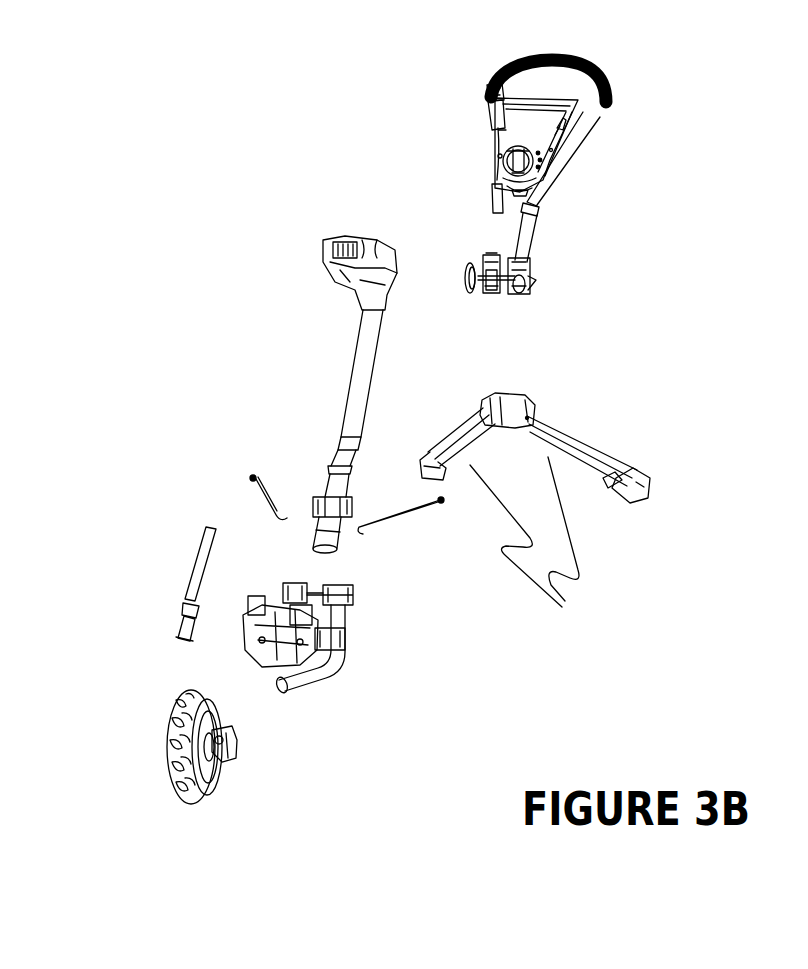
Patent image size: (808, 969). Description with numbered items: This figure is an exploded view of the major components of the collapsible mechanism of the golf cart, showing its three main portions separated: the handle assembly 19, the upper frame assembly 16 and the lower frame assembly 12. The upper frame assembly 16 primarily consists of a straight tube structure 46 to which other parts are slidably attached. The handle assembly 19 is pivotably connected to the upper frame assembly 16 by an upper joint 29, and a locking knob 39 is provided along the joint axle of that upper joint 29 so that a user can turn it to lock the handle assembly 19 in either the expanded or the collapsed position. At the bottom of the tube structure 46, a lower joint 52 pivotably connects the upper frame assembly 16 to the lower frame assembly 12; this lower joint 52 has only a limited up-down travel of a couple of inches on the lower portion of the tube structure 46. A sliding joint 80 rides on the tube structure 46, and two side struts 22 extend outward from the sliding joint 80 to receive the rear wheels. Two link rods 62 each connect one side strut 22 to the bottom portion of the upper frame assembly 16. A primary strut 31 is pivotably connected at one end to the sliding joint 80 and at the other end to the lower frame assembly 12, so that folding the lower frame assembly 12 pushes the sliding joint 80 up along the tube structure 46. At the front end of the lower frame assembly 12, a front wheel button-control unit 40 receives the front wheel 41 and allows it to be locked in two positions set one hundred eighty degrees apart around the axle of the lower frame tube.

The lower frame assembly 12 is at (327, 677).
The upper frame assembly 16 is at (303, 405).
The handle assembly 19 is at (533, 238).
The side strut 22 is at (527, 551).
The upper joint 29 is at (537, 287).
The primary strut 31 is at (195, 557).
The locking knob 39 is at (457, 267).
The front wheel button-control unit 40 is at (232, 752).
The front wheel 41 is at (225, 785).
The tube structure 46 is at (350, 373).
The lower joint 52 is at (355, 603).
The link rod 62 is at (413, 530).
The sliding joint 80 is at (523, 395).